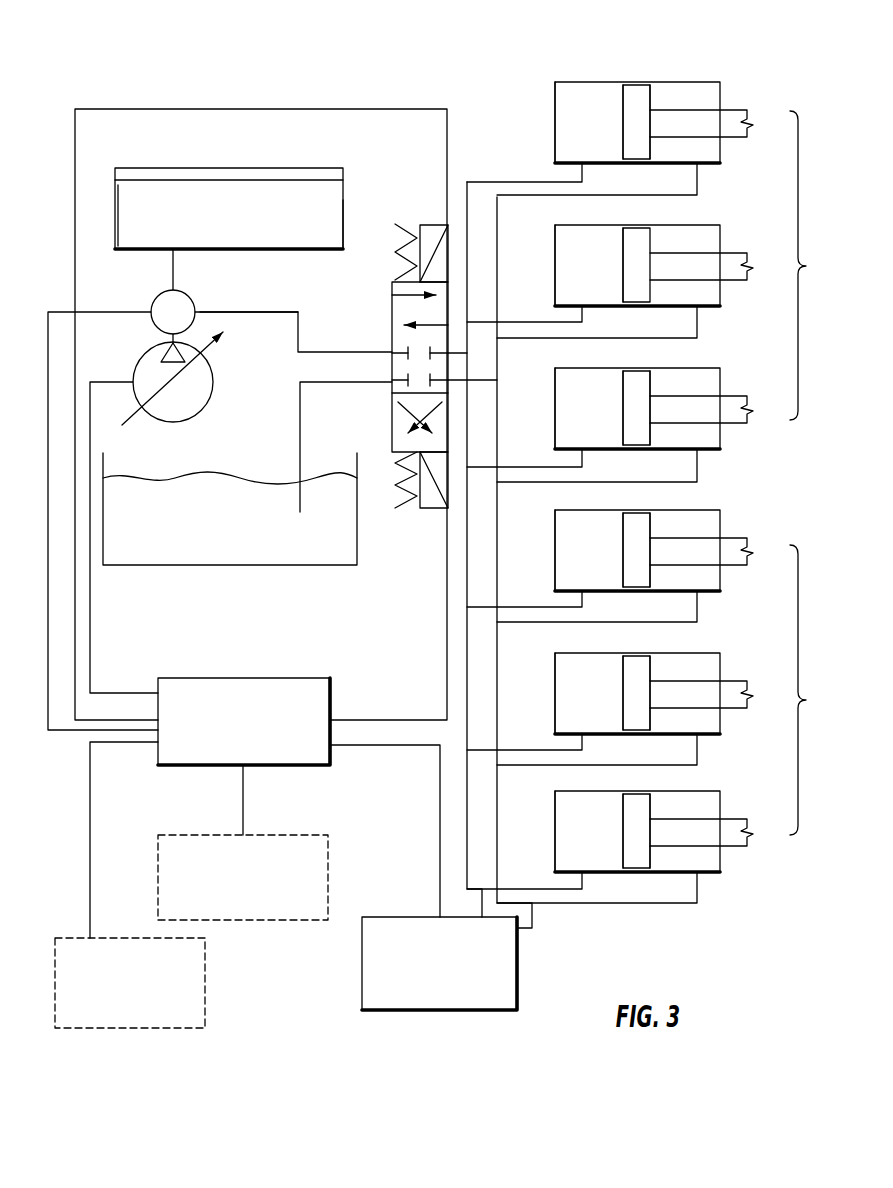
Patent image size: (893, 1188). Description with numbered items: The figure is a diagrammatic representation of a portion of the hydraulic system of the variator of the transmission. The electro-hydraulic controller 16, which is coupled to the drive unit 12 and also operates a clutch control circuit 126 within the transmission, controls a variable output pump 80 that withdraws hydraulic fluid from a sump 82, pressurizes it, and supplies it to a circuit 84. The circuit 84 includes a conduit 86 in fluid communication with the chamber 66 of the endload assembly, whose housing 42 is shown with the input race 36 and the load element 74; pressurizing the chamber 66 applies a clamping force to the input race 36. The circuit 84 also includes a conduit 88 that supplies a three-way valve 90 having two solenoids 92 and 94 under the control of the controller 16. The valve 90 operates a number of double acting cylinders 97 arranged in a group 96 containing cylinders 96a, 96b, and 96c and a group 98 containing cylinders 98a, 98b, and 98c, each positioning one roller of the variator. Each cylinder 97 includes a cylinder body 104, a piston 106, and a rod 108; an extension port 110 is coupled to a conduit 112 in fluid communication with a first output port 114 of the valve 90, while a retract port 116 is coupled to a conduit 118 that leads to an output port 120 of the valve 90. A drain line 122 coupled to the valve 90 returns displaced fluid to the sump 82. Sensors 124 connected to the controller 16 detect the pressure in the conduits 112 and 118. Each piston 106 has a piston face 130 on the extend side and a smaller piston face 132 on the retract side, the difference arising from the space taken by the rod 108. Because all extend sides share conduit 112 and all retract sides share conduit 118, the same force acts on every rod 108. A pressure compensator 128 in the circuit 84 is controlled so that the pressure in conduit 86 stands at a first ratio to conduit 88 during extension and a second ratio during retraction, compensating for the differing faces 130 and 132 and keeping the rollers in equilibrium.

The drive unit 12 is at (310, 835).
The electro-hydraulic controller 16 is at (285, 678).
The input race 36 is at (305, 172).
The housing 42 is at (343, 233).
The chamber 66 is at (328, 200).
The load element 74 is at (157, 188).
The variable output pump 80 is at (213, 385).
The sump 82 is at (178, 553).
The circuit 84 is at (211, 340).
The conduit 86 is at (171, 273).
The conduit 88 is at (260, 312).
The three-way valve 90 is at (442, 339).
The solenoid 92 is at (431, 223).
The solenoid 94 is at (432, 502).
The group of hydraulic cylinders 96 is at (809, 265).
The cylinder 96a is at (680, 82).
The cylinder 96b is at (680, 225).
The cylinder 96c is at (680, 368).
The double acting cylinder 97 is at (658, 69).
The group of hydraulic cylinders 98 is at (810, 690).
The cylinder 98a is at (680, 510).
The cylinder 98b is at (680, 653).
The cylinder 98c is at (680, 791).
The cylinder body 104 is at (592, 82).
The piston 106 is at (636, 152).
The rod 108 is at (735, 120).
The extension port 110 is at (582, 162).
The conduit 112 is at (527, 181).
The first output port 114 is at (456, 351).
The retract port 116 is at (700, 162).
The conduit 118 is at (528, 198).
The output port 120 is at (459, 383).
The drain line 122 is at (300, 425).
The sensors 124 is at (517, 982).
The clutch control circuit 126 is at (205, 993).
The pressure compensator 128 is at (181, 291).
The piston face 130 is at (623, 99).
The piston face 132 is at (651, 98).